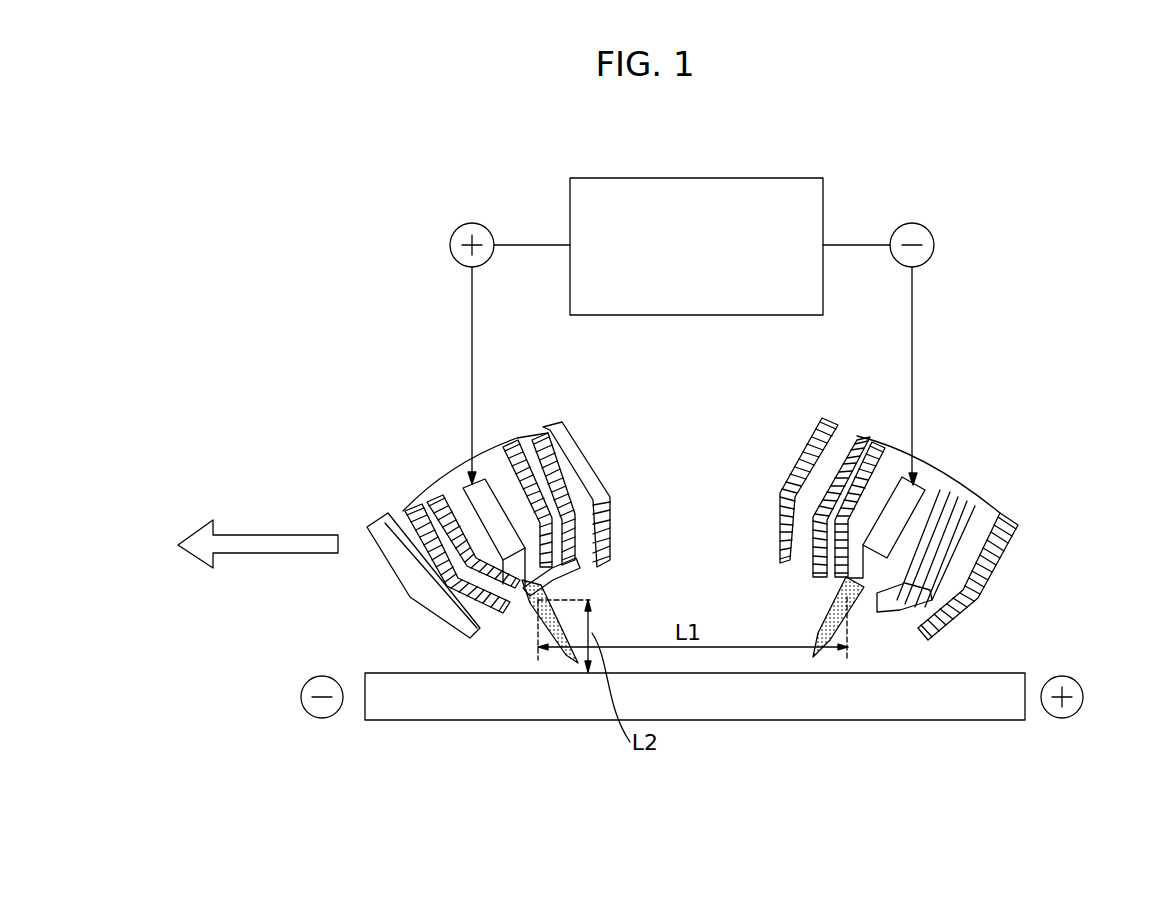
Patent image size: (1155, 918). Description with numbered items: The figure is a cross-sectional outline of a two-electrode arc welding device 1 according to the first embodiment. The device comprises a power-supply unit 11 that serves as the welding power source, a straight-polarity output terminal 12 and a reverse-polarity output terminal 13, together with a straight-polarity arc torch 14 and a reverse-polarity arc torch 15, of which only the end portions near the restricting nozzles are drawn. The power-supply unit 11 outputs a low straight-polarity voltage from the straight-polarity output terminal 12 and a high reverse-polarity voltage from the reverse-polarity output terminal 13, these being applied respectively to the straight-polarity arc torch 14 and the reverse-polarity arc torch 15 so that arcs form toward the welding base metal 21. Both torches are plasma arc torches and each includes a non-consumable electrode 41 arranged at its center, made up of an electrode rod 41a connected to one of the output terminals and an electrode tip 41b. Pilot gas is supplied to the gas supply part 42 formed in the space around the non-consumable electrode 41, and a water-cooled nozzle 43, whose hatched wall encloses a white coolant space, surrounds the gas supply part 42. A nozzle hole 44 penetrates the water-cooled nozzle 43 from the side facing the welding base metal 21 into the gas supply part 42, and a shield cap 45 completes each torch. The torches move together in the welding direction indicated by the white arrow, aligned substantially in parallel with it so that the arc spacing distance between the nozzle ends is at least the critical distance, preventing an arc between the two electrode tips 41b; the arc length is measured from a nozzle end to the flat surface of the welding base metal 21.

The two-electrode arc welding device 1 is at (1032, 310).
The power-supply unit 11 is at (750, 178).
The straight-polarity output terminal 12 is at (912, 223).
The reverse-polarity output terminal 13 is at (472, 223).
The straight-polarity arc torch 14 is at (1033, 485).
The reverse-polarity arc torch 15 is at (620, 462).
The welding base metal 21 is at (978, 703).
The non-consumable electrode 41 is at (506, 507).
The electrode rod 41a is at (472, 482).
The electrode tip 41b is at (517, 562).
The gas supply part 42 is at (456, 509).
The water-cooled nozzle 43 is at (567, 557).
The nozzle hole 44 is at (547, 602).
The shield cap 45 is at (608, 545).